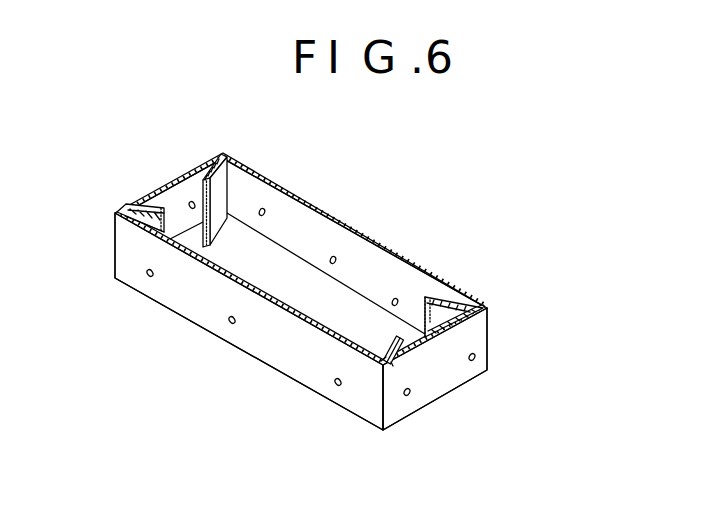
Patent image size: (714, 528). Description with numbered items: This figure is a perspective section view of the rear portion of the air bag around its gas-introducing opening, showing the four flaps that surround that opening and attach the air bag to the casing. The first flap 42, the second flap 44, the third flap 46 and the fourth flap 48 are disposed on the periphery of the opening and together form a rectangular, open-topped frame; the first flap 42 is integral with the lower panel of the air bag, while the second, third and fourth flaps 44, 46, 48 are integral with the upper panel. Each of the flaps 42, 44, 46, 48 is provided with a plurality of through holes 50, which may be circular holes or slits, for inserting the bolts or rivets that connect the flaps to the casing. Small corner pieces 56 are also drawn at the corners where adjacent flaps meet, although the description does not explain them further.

The first flap 42 is at (354, 259).
The second flap 44 is at (177, 192).
The third flap 46 is at (267, 337).
The fourth flap 48 is at (440, 378).
The through holes 50 is at (193, 201).
The corner brackets 56 is at (160, 193).